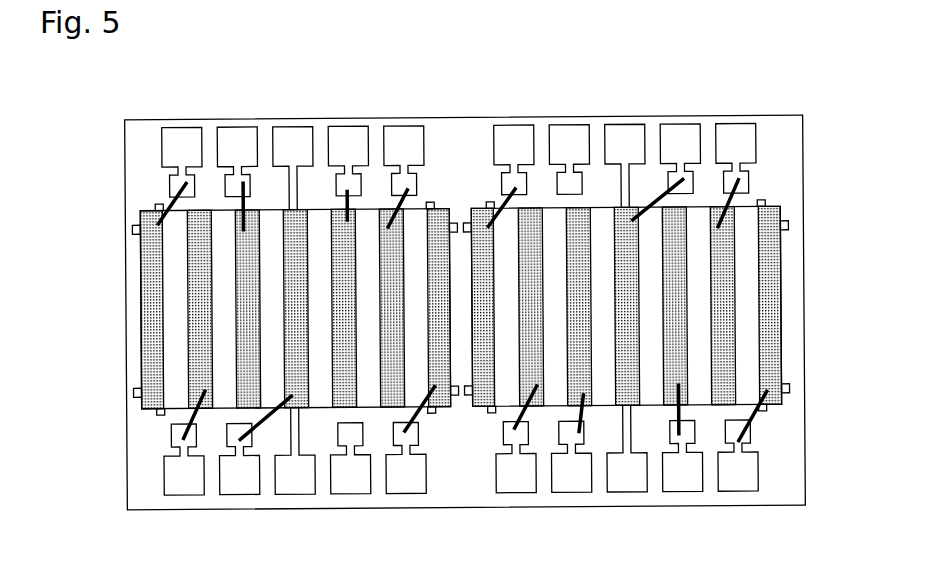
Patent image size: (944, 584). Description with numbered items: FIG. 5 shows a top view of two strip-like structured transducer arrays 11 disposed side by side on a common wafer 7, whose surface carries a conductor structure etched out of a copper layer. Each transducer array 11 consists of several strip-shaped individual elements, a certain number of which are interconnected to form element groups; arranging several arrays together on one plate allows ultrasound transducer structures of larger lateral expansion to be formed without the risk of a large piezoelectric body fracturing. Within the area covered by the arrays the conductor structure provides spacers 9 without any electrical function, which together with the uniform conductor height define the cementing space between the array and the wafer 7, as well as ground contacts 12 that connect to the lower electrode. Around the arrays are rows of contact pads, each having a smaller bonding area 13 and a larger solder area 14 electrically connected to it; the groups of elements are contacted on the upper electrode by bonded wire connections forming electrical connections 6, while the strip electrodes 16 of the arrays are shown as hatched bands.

The electrical connection 6 is at (195, 415).
The wafer 7 is at (452, 147).
The spacer 9 is at (789, 390).
The transducer array 11 is at (412, 332).
The ground contact 12 is at (295, 190).
The inner bonding pad 13 is at (570, 433).
The outer bonding pad 14 is at (683, 138).
The electrode stripe 16 is at (157, 271).